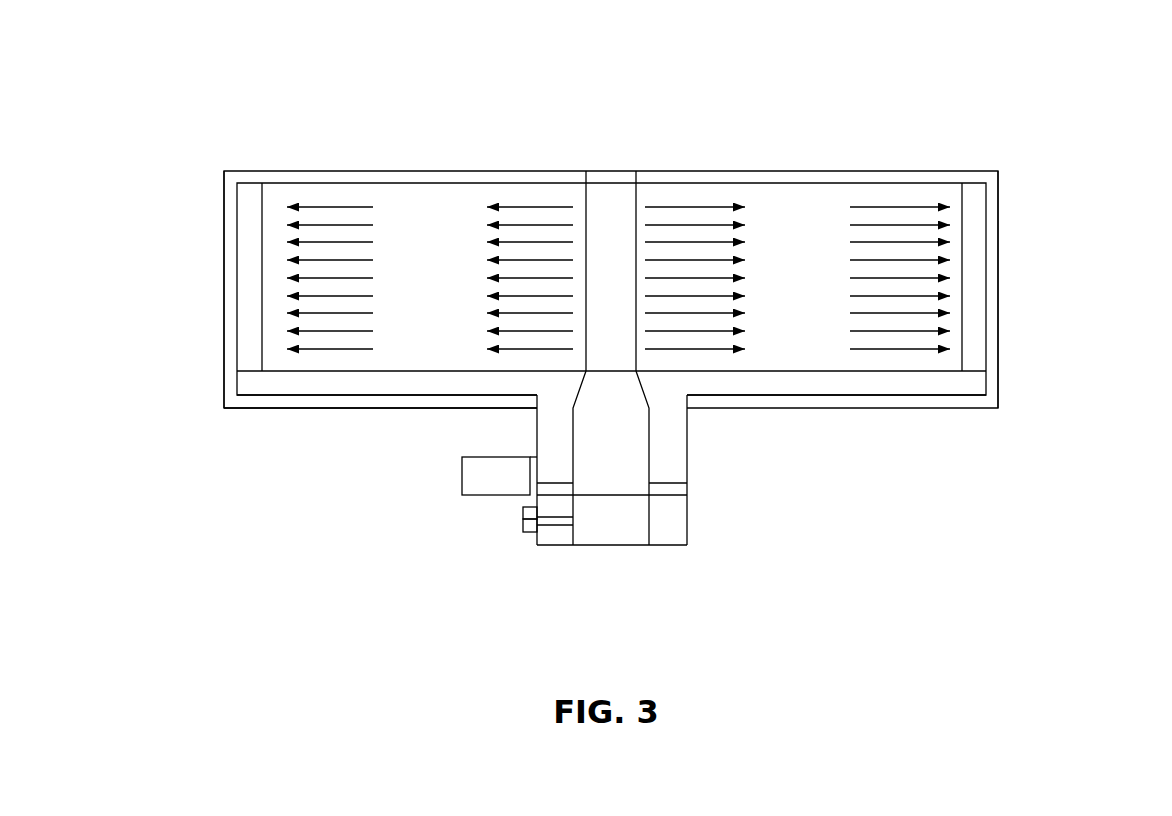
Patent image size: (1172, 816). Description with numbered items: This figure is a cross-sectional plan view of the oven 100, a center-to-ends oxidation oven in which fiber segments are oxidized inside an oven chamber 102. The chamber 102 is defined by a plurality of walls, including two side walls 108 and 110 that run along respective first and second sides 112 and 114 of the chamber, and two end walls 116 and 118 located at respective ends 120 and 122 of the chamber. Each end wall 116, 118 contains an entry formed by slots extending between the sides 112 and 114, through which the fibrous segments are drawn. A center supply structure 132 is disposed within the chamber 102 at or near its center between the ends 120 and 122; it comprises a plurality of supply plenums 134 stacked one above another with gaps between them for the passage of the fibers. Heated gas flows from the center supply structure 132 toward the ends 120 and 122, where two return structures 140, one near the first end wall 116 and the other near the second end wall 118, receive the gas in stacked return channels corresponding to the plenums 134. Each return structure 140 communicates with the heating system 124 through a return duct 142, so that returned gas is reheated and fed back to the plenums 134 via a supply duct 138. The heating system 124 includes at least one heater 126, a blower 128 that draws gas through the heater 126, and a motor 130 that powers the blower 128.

The oven 100 is at (615, 680).
The oven chamber 102 is at (810, 200).
The side wall 108 is at (302, 408).
The side wall 110 is at (322, 170).
The first side 112 is at (799, 443).
The second side 114 is at (762, 153).
The first end wall 116 is at (223, 222).
The second end wall 118 is at (1000, 220).
The first end 120 is at (201, 333).
The second end 122 is at (1028, 320).
The heating system 124 is at (536, 571).
The heater 126 is at (557, 481).
The blower 128 is at (610, 533).
The motor 130 is at (500, 497).
The center supply structure 132 is at (569, 196).
The supply plenum 134 is at (638, 202).
The supply duct 138 is at (590, 451).
The return structure 140 is at (249, 303).
The return duct 142 is at (400, 380).